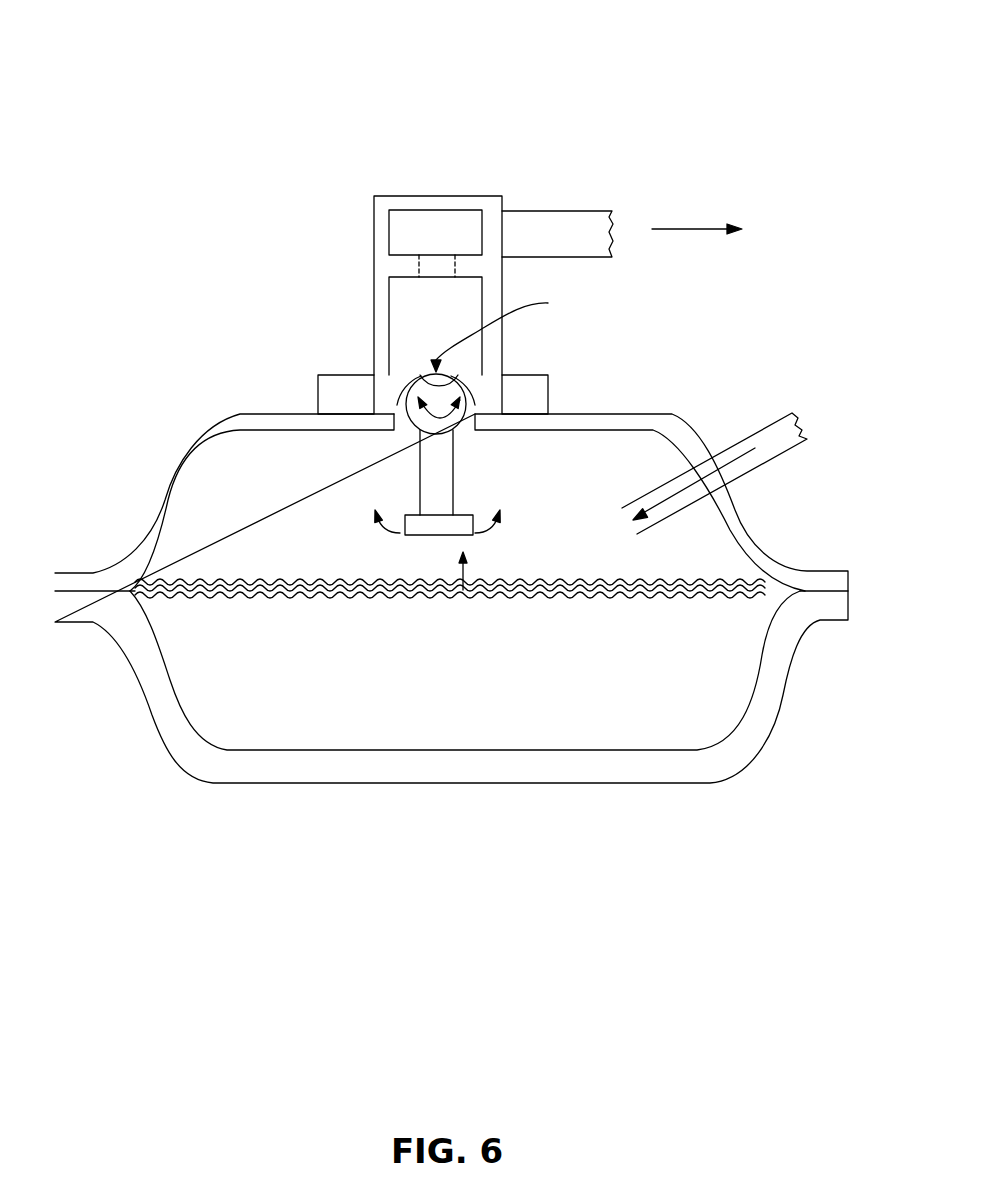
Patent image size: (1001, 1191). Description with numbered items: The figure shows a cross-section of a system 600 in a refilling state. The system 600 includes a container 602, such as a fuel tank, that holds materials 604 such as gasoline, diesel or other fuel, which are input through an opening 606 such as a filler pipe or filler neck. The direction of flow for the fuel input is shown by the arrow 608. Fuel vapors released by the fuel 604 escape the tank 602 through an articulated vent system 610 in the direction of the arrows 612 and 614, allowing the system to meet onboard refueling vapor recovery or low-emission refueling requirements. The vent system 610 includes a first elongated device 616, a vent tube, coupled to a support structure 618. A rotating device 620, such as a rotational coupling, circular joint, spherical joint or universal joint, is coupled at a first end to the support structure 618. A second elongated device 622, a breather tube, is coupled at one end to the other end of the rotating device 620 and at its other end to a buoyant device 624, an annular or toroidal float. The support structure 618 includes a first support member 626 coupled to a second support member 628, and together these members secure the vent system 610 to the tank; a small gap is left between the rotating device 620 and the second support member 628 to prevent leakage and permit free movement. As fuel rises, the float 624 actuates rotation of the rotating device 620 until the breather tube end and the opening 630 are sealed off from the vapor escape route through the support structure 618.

The system 600 is at (178, 68).
The container 602 is at (786, 647).
The materials 604 is at (727, 693).
The opening 606 is at (785, 452).
The arrow 608 is at (733, 446).
The vent system 610 is at (431, 288).
The arrow 612 is at (462, 573).
The arrow 614 is at (670, 229).
The first elongated device 616 is at (577, 211).
The support structure 618 is at (374, 307).
The rotating device 620 is at (476, 405).
The second elongated device 622 is at (418, 443).
The buoyant device 624 is at (465, 515).
The first support member 626 is at (376, 196).
The second support member 628 is at (322, 375).
The opening 630 is at (511, 324).